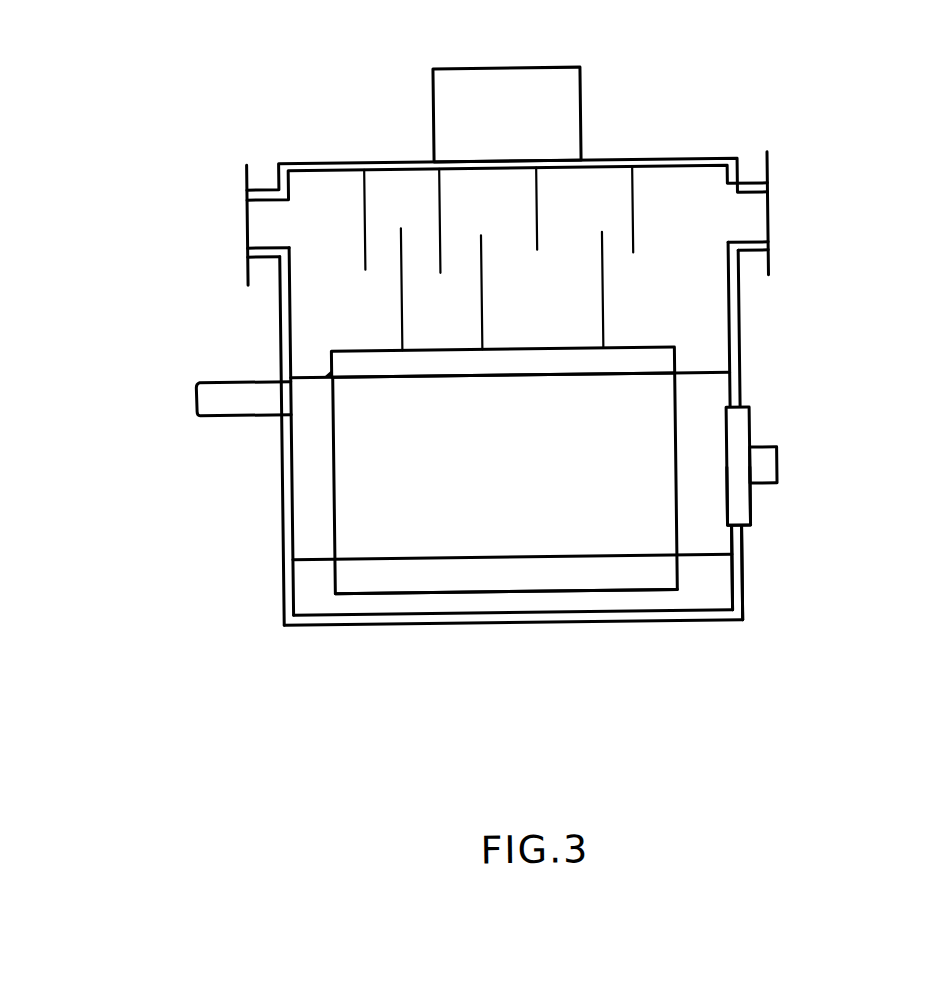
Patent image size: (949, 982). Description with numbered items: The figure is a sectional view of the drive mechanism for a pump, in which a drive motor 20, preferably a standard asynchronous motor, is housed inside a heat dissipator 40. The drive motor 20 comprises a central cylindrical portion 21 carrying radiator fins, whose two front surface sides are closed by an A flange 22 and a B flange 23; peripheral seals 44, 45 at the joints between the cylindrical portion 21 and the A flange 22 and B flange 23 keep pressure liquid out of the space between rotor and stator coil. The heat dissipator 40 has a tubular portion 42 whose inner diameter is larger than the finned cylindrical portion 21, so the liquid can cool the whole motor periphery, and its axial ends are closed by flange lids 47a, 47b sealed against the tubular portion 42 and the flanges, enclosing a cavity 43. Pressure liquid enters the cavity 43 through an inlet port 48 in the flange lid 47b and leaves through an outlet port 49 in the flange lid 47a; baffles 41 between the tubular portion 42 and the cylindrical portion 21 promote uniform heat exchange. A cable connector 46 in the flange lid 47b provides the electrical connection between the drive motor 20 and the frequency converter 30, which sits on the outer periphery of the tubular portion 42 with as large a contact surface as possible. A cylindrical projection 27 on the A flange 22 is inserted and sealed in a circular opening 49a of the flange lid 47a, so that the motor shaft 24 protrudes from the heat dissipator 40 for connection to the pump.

The drive motor 20 is at (531, 521).
The central cylindrical portion 21 is at (654, 355).
The A flange 22 is at (707, 420).
The B flange 23 is at (309, 480).
The motor shaft 24 is at (766, 469).
The cylindrical projection 27 is at (742, 506).
The frequency converter 30 is at (547, 102).
The heat dissipator 40 is at (694, 637).
The baffles 41 is at (540, 192).
The tubular portion 42 is at (465, 618).
The cavity 43 is at (686, 569).
The peripheral seal 44 is at (331, 560).
The peripheral seal 45 is at (677, 371).
The cable connector 46 is at (245, 390).
The flange lid 47a is at (735, 601).
The flange lid 47b is at (282, 615).
The inlet port 48 is at (265, 222).
The outlet port 49 is at (747, 215).
The circular opening 49a is at (738, 531).